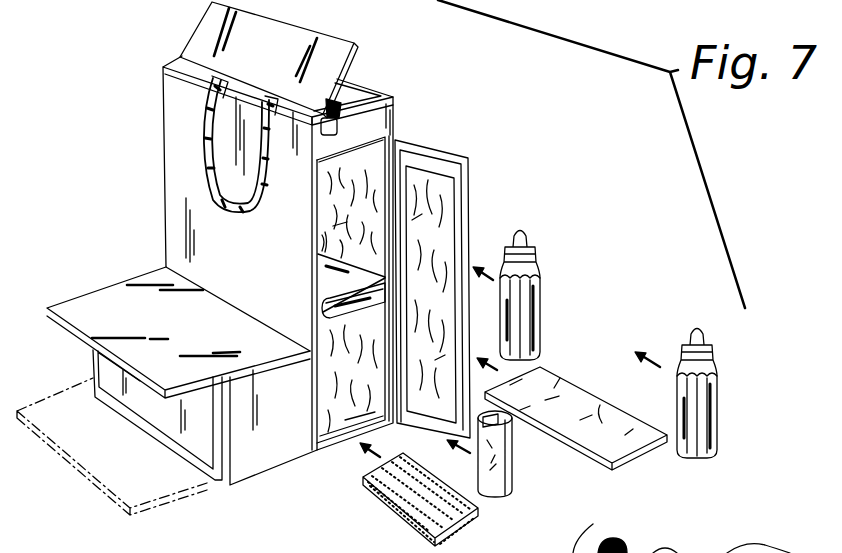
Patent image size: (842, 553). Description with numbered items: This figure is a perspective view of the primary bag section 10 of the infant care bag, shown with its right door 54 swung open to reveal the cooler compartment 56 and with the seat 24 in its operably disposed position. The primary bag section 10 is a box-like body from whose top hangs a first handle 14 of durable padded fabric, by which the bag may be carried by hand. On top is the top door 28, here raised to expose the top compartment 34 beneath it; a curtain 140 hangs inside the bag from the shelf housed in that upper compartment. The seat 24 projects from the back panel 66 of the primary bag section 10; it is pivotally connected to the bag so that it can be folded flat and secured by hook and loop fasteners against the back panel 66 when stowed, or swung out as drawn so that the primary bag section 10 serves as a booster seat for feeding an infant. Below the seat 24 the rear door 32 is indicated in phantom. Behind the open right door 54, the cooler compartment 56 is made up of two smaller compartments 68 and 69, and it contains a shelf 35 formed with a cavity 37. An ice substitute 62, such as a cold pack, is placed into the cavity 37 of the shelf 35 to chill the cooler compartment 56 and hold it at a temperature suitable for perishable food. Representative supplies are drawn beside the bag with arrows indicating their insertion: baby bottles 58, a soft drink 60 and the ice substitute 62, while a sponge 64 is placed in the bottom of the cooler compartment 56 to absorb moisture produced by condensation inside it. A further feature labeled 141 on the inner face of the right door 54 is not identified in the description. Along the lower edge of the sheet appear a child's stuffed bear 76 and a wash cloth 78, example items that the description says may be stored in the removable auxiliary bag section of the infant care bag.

The primary bag section 10 is at (254, 486).
The first handle 14 is at (210, 177).
The seat 24 is at (100, 300).
The top door 28 is at (212, 32).
The rear door 32 is at (120, 379).
The top compartment 34 is at (353, 90).
The shelf 35 is at (322, 278).
The cavity 37 is at (322, 302).
The right door 54 is at (443, 153).
The cooler compartment 56 is at (370, 178).
The baby bottles 58 is at (532, 282).
The soft drinks 60 is at (508, 463).
The ice substitute 62 is at (633, 443).
The sponge 64 is at (397, 507).
The back panel 66 is at (183, 210).
The smaller compartment 68 is at (333, 230).
The smaller compartment 69 is at (378, 425).
The child's stuffed bear 76 is at (640, 543).
The wash cloth 78 is at (790, 550).
The curtain 140 is at (323, 197).
The door liner 141 is at (433, 203).